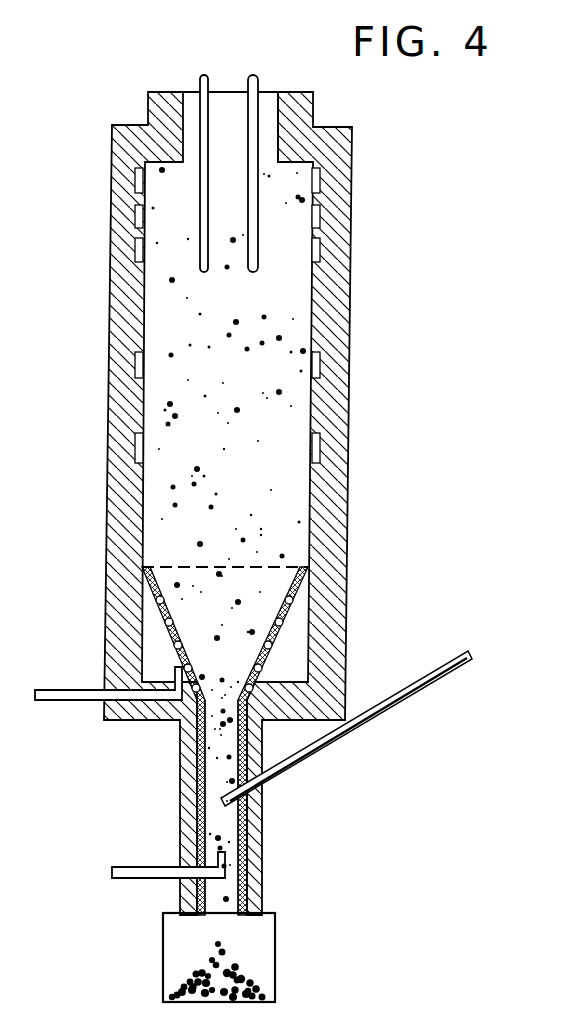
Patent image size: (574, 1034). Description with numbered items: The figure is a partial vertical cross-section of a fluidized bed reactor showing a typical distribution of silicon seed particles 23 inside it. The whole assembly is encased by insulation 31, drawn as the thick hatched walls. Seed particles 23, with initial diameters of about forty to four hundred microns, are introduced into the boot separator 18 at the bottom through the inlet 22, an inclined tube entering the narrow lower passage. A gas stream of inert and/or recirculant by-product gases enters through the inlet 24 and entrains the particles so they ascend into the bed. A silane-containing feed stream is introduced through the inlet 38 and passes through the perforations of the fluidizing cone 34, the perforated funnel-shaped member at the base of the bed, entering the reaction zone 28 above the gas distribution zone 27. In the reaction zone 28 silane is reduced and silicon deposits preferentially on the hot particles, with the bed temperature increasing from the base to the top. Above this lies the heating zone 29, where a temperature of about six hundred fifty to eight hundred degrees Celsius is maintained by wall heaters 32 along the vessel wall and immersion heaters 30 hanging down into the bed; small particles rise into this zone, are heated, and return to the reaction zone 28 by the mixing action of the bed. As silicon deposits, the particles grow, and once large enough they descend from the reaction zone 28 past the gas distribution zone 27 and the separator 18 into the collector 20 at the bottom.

The boot separator 18 is at (215, 805).
The collector 20 is at (240, 945).
The inlet 22 is at (270, 770).
The silicon seed particles 23 is at (262, 343).
The inlet 24 is at (136, 870).
The gas distribution zone 27 is at (265, 610).
The reaction zone 28 is at (272, 410).
The heating zone 29 is at (290, 188).
The immersion heaters 30 is at (202, 130).
The insulation 31 is at (117, 395).
The wall heaters 32 is at (143, 222).
The fluidizing cone 34 is at (150, 597).
The inlet 38 is at (60, 700).